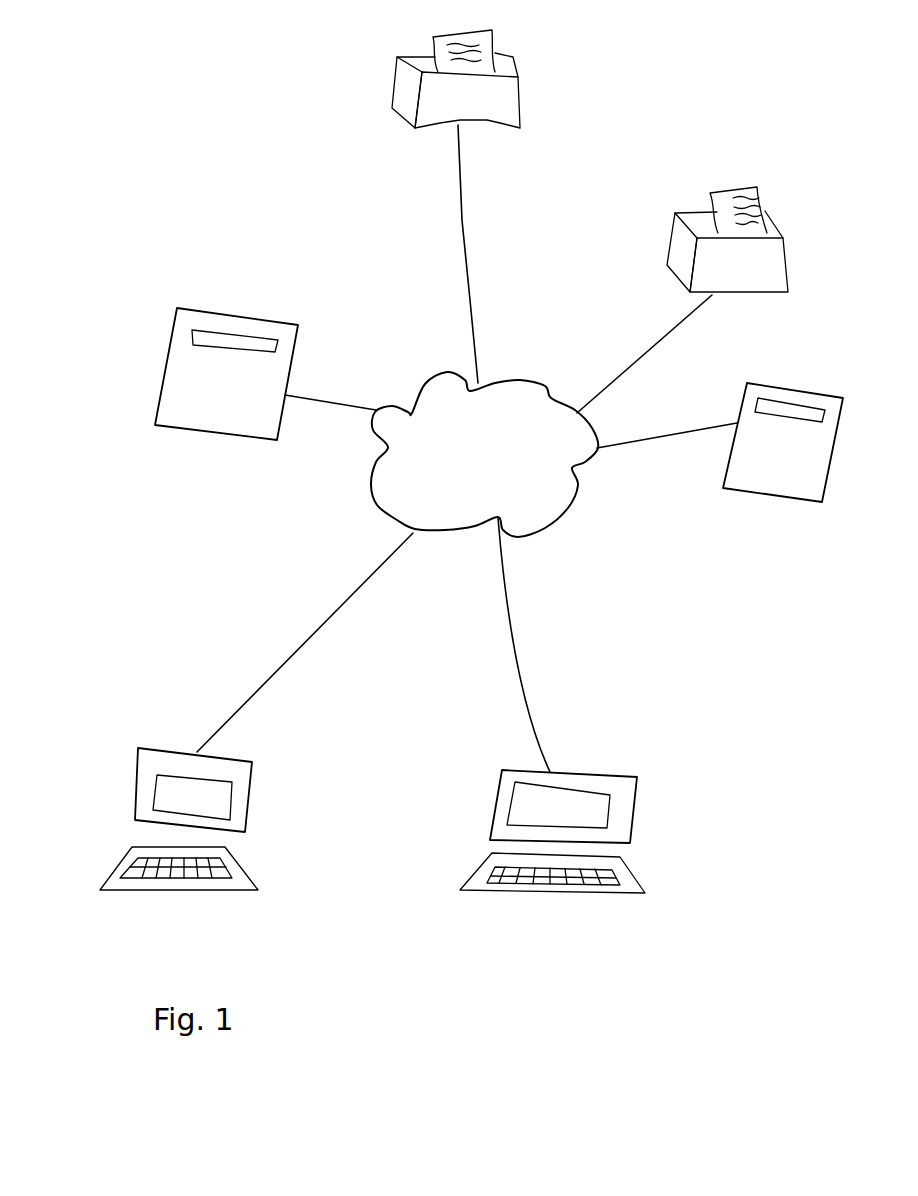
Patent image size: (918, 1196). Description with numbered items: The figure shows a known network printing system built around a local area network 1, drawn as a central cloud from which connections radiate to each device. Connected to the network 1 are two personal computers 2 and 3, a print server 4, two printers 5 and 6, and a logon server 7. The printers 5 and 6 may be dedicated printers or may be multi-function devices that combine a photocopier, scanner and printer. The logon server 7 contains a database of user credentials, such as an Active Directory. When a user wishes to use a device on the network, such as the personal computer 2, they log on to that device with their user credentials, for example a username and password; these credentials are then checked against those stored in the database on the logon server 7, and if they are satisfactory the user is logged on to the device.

The local area network 1 is at (573, 497).
The personal computer 2 is at (137, 790).
The personal computer 3 is at (493, 803).
The print server 4 is at (160, 392).
The printer 5 is at (393, 83).
The printer 6 is at (672, 242).
The logon server 7 is at (745, 492).